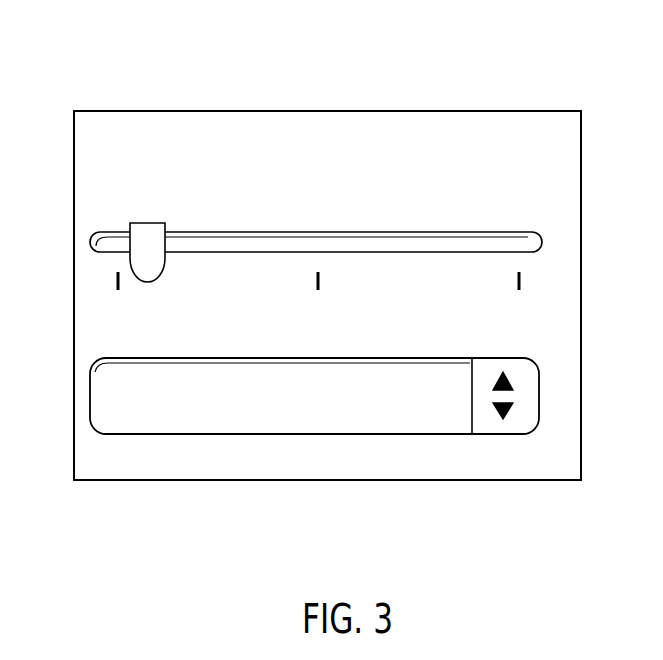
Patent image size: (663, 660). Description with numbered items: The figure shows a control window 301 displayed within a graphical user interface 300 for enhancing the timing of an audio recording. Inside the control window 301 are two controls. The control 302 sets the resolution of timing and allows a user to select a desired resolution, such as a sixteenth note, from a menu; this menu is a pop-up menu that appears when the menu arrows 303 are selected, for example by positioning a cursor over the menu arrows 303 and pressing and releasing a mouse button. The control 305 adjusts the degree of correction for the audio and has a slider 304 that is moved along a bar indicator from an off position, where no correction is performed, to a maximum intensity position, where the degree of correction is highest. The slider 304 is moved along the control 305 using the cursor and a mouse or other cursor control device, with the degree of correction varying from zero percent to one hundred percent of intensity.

The graphical user interface 300 is at (596, 44).
The control window 301 is at (540, 481).
The control to set resolution of timing 302 is at (328, 425).
The menu arrows 303 is at (528, 375).
The slider 304 is at (133, 224).
The control to adjust a degree of correction 305 is at (540, 234).